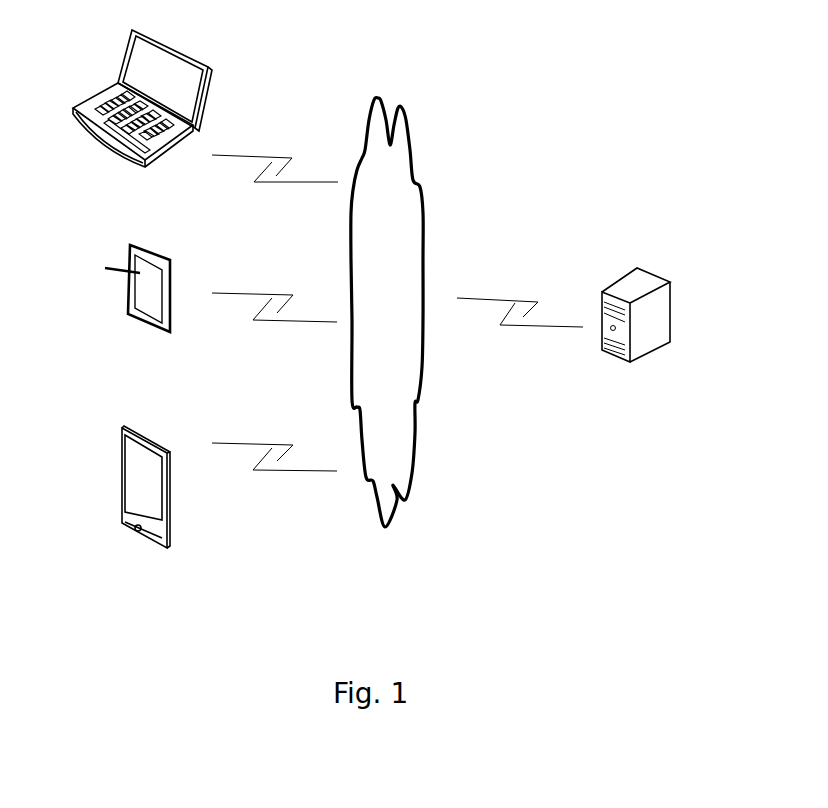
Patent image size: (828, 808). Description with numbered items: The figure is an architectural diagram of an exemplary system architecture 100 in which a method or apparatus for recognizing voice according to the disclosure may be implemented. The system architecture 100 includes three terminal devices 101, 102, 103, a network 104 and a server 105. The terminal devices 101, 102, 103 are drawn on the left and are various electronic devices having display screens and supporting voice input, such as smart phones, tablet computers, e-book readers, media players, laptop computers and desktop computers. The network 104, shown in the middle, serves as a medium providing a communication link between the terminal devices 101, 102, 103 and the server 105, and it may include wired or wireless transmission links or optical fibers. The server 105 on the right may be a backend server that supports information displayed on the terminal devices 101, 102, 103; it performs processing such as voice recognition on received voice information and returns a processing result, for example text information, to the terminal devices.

The system architecture 100 is at (662, 78).
The terminal device 101 is at (146, 508).
The terminal device 102 is at (137, 308).
The terminal device 103 is at (142, 114).
The network 104 is at (387, 312).
The server 105 is at (636, 338).